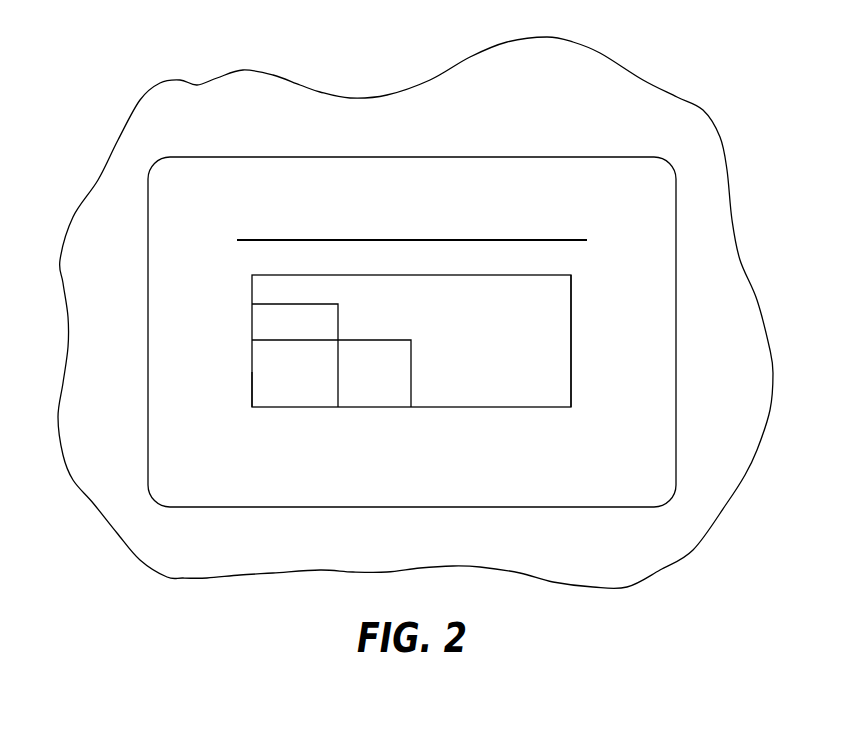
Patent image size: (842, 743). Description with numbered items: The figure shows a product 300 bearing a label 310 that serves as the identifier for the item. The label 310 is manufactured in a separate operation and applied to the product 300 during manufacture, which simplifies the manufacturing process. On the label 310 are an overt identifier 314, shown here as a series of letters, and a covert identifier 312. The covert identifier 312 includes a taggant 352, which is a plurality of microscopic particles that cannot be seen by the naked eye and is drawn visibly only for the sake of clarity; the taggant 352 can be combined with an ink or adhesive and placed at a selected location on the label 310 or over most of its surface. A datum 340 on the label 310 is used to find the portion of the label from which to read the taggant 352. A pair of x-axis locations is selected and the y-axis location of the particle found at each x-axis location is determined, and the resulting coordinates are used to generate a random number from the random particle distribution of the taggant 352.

The product 300 is at (627, 92).
The label 310 is at (413, 157).
The overt identifier 314 is at (452, 195).
The covert identifier 312 is at (368, 320).
The datum 340 is at (252, 372).
The taggant 352 is at (552, 365).